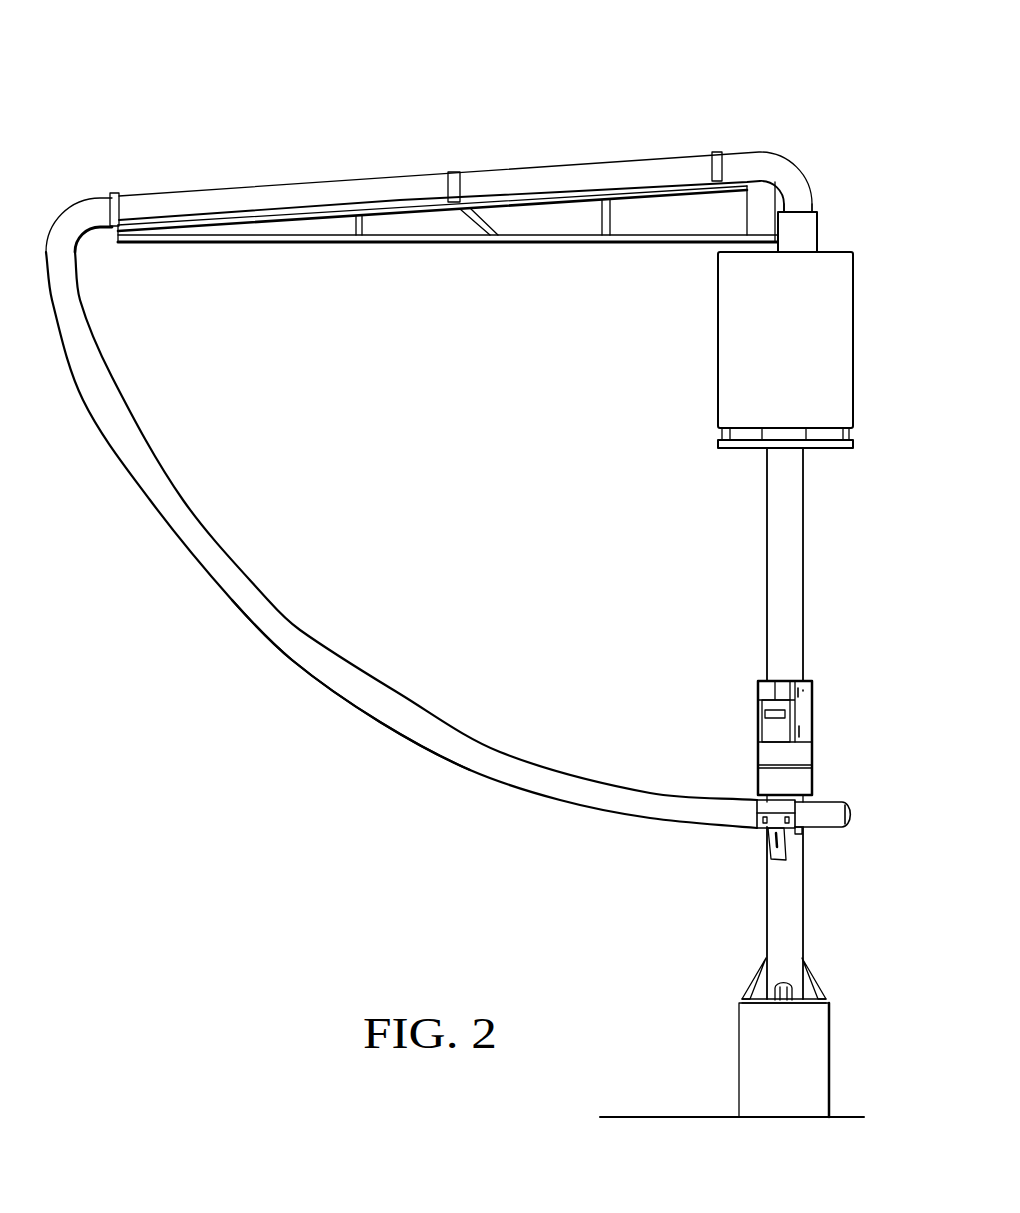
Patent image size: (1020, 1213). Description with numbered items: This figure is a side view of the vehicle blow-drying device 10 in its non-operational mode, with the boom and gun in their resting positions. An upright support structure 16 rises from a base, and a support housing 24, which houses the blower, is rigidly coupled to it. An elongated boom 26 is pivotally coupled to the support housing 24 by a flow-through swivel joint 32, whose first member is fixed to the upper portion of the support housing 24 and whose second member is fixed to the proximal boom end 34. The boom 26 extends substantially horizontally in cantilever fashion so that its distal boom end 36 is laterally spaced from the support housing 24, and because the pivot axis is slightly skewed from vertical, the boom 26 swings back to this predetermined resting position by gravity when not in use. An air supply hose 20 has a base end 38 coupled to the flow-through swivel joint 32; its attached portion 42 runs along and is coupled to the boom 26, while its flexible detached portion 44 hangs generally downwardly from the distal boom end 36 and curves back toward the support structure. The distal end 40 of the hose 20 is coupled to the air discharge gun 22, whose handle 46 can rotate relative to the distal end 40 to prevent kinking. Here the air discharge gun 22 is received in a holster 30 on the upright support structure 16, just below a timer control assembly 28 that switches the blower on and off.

The vehicle blow-drying device 10 is at (664, 66).
The upright support structure 16 is at (767, 646).
The air supply hose 20 is at (112, 377).
The air discharge gun 22 is at (827, 802).
The support housing 24 is at (718, 347).
The elongated boom 26 is at (482, 245).
The timer control assembly 28 is at (758, 707).
The holster 30 is at (802, 837).
The flow-through swivel joint 32 is at (817, 232).
The proximal boom end 34 is at (781, 207).
The distal boom end 36 is at (118, 242).
The base end 38 is at (808, 207).
The distal end 40 is at (757, 800).
The attached portion 42 is at (430, 172).
The detached portion 44 is at (308, 638).
The handle 46 is at (768, 850).